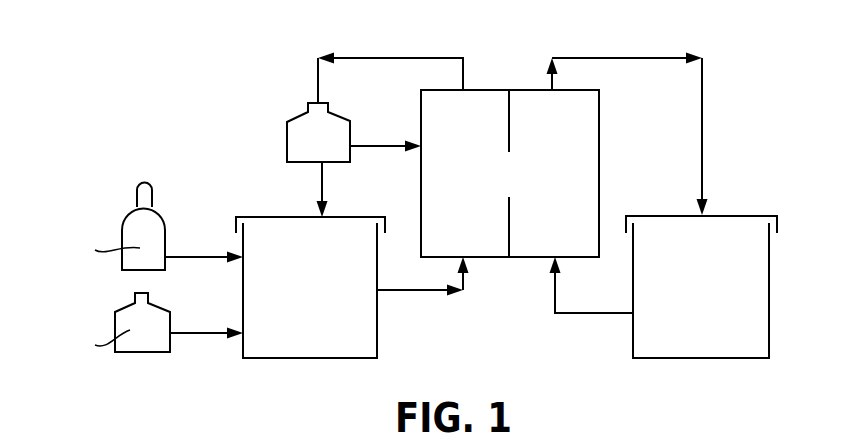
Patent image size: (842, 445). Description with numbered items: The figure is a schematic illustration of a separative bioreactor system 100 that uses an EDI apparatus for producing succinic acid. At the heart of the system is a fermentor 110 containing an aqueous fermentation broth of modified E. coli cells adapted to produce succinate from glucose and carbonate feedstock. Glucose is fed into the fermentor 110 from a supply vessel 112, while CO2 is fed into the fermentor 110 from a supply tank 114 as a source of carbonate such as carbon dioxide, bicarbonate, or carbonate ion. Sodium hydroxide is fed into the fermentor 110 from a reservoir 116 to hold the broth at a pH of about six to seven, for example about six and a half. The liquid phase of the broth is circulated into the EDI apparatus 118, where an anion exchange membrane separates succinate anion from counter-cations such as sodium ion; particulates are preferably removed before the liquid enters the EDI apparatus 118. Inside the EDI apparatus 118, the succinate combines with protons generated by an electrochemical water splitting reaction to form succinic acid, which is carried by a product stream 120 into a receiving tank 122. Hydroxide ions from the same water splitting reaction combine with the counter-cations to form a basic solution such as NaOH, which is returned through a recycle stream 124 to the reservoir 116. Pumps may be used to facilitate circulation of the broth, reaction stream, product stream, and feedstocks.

The separative bioreactor system 100 is at (225, 92).
The fermentor 110 is at (263, 347).
The supply vessel 112 is at (145, 345).
The supply tank 114 is at (155, 222).
The reservoir 116 is at (333, 123).
The EDI apparatus 118 is at (472, 235).
The product stream 120 is at (657, 60).
The receiving tank 122 is at (663, 237).
The recycle stream 124 is at (404, 57).